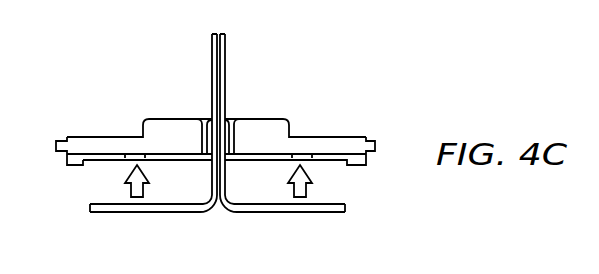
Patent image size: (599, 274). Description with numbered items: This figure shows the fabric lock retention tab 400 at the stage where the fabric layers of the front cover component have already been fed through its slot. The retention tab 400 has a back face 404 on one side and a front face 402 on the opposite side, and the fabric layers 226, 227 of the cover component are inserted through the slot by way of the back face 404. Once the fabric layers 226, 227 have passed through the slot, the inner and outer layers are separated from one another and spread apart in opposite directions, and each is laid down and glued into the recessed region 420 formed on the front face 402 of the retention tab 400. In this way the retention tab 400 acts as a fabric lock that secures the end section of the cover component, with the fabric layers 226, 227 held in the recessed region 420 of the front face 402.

The retention tab 400 is at (103, 138).
The front face 402 is at (328, 163).
The back face 404 is at (257, 118).
The recessed region 420 is at (102, 160).
The fabric layer 226 is at (120, 213).
The fabric layer 227 is at (295, 213).